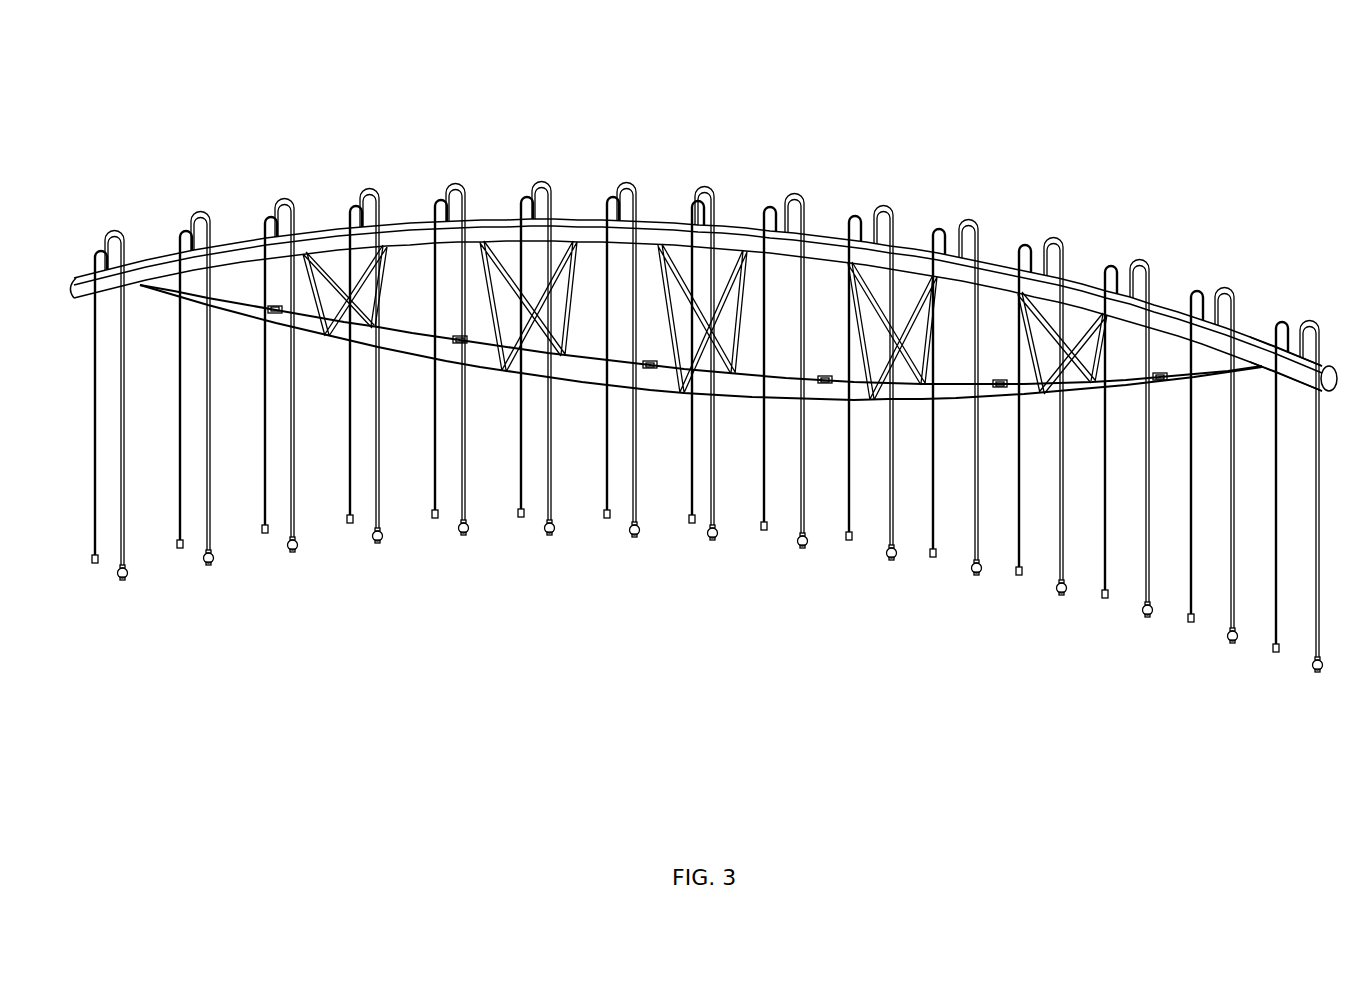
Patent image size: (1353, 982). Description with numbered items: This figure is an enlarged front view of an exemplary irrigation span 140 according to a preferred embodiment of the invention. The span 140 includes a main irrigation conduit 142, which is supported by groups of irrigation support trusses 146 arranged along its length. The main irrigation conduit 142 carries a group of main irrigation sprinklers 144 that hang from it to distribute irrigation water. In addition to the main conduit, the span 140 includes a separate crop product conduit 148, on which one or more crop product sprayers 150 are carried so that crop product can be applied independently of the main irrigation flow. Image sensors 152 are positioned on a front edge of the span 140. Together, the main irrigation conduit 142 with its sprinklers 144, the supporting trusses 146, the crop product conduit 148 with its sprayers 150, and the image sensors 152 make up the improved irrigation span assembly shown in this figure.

The span 140 is at (803, 70).
The main irrigation conduit 142 is at (405, 223).
The main irrigation sprinklers 144 is at (202, 213).
The irrigation support trusses 146 is at (665, 393).
The crop product conduit 148 is at (1253, 352).
The crop product sprayers 150 is at (178, 245).
The image sensors 152 is at (650, 362).